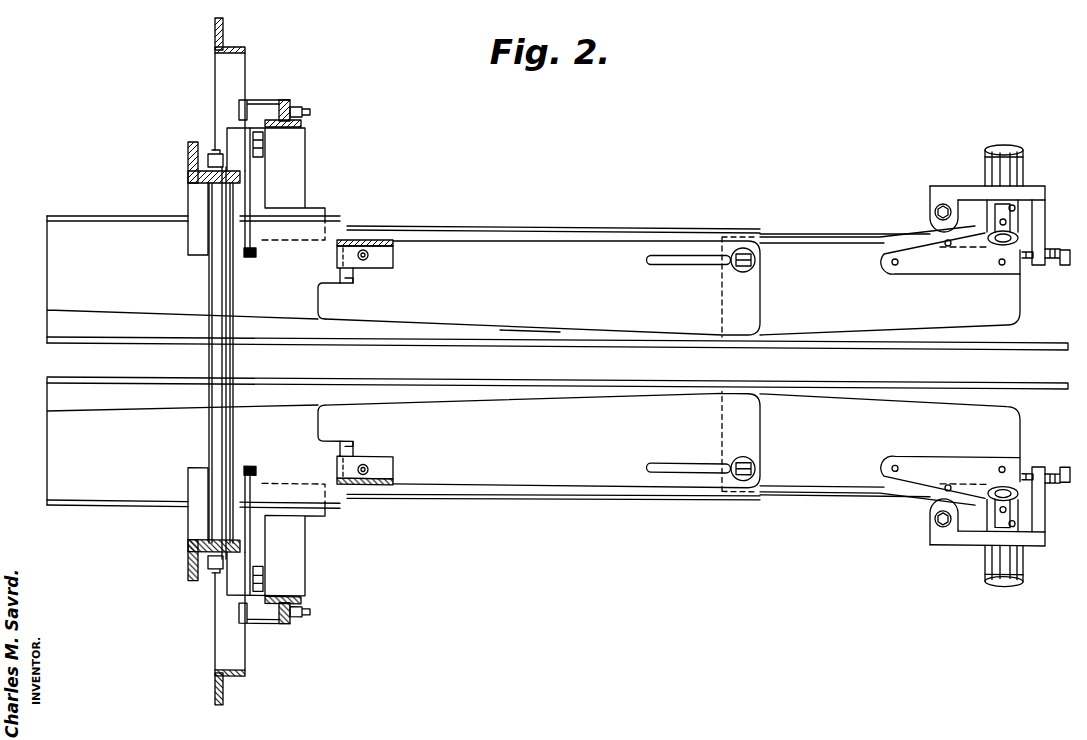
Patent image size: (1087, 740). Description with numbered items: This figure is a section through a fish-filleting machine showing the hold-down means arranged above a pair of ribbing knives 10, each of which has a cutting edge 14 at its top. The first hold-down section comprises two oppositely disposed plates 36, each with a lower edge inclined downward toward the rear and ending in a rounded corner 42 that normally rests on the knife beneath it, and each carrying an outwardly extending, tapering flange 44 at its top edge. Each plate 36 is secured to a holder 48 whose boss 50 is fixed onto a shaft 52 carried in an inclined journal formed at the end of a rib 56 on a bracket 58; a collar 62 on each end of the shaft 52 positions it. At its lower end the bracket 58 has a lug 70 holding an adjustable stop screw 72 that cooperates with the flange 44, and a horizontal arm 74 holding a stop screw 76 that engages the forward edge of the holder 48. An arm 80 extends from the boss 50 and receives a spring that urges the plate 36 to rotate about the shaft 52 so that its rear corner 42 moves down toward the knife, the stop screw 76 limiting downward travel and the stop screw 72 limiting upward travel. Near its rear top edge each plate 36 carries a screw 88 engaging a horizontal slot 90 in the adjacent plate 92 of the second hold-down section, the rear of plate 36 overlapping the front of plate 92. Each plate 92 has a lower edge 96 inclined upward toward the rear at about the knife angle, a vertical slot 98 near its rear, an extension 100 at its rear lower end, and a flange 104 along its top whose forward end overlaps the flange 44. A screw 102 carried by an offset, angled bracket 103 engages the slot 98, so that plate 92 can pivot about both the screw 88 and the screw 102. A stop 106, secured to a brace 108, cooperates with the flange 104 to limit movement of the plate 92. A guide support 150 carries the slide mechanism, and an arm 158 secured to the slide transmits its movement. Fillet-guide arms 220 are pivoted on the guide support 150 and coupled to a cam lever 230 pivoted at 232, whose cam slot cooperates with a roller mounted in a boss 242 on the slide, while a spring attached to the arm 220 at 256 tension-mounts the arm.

The ribbing knife 10 is at (876, 384).
The cutting edge 14 is at (416, 345).
The plate 36 is at (890, 366).
The rounded corner 42 is at (724, 395).
The flange 44 is at (858, 240).
The holder 48 is at (935, 274).
The boss 50 is at (1018, 227).
The shaft 52 is at (1000, 246).
The rib 56 is at (1000, 168).
The bracket 58 is at (1045, 192).
The collar 62 is at (1000, 150).
The lug 70 is at (933, 197).
The stop screw 72 is at (933, 213).
The horizontal arm 74 is at (1042, 240).
The stop screw 76 is at (1067, 264).
The arm 80 is at (1015, 209).
The screw 88 is at (754, 263).
The horizontal slot 90 is at (682, 264).
The plate 92 is at (542, 364).
The lower edge 96 is at (525, 397).
The vertical slot 98 is at (375, 257).
The extension 100 is at (318, 298).
The screw 102 is at (363, 262).
The bracket 103 is at (381, 240).
The flange 104 is at (527, 231).
The stop 106 is at (47, 265).
The brace 108 is at (125, 221).
The guide support 150 is at (190, 166).
The arm 158 is at (222, 68).
The arm 220 is at (305, 126).
The cam lever 230 is at (253, 197).
The pivot 232 is at (263, 147).
The boss 242 is at (305, 110).
The spring attachment point 256 is at (274, 100).